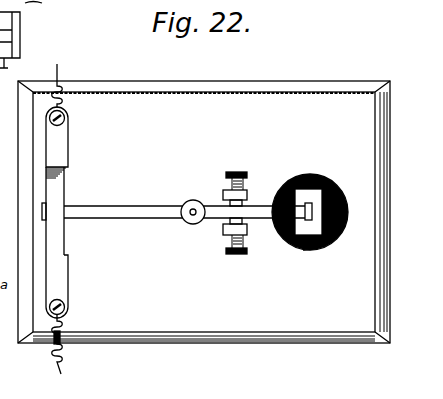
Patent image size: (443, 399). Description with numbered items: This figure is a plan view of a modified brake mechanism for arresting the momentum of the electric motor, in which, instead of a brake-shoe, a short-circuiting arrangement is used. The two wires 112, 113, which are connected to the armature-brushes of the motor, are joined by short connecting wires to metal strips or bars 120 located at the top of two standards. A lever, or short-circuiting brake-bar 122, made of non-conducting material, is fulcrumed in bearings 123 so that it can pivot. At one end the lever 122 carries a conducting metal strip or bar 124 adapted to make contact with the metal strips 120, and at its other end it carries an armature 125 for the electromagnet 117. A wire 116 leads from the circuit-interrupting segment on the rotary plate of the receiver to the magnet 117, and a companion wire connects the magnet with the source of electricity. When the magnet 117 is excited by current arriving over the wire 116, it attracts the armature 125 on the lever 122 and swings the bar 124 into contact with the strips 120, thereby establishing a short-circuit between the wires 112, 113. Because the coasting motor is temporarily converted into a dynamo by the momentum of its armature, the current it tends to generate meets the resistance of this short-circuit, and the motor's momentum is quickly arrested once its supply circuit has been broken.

The wire 112 is at (67, 347).
The wire 113 is at (66, 87).
The wire 116 is at (398, 173).
The electromagnet 117 is at (323, 245).
The metal strips or bars 120 is at (68, 146).
The short-circuiting brake-bar 122 is at (188, 220).
The bearings 123 is at (247, 192).
The conducting metal strip or bar 124 is at (58, 187).
The armature 125 is at (313, 197).